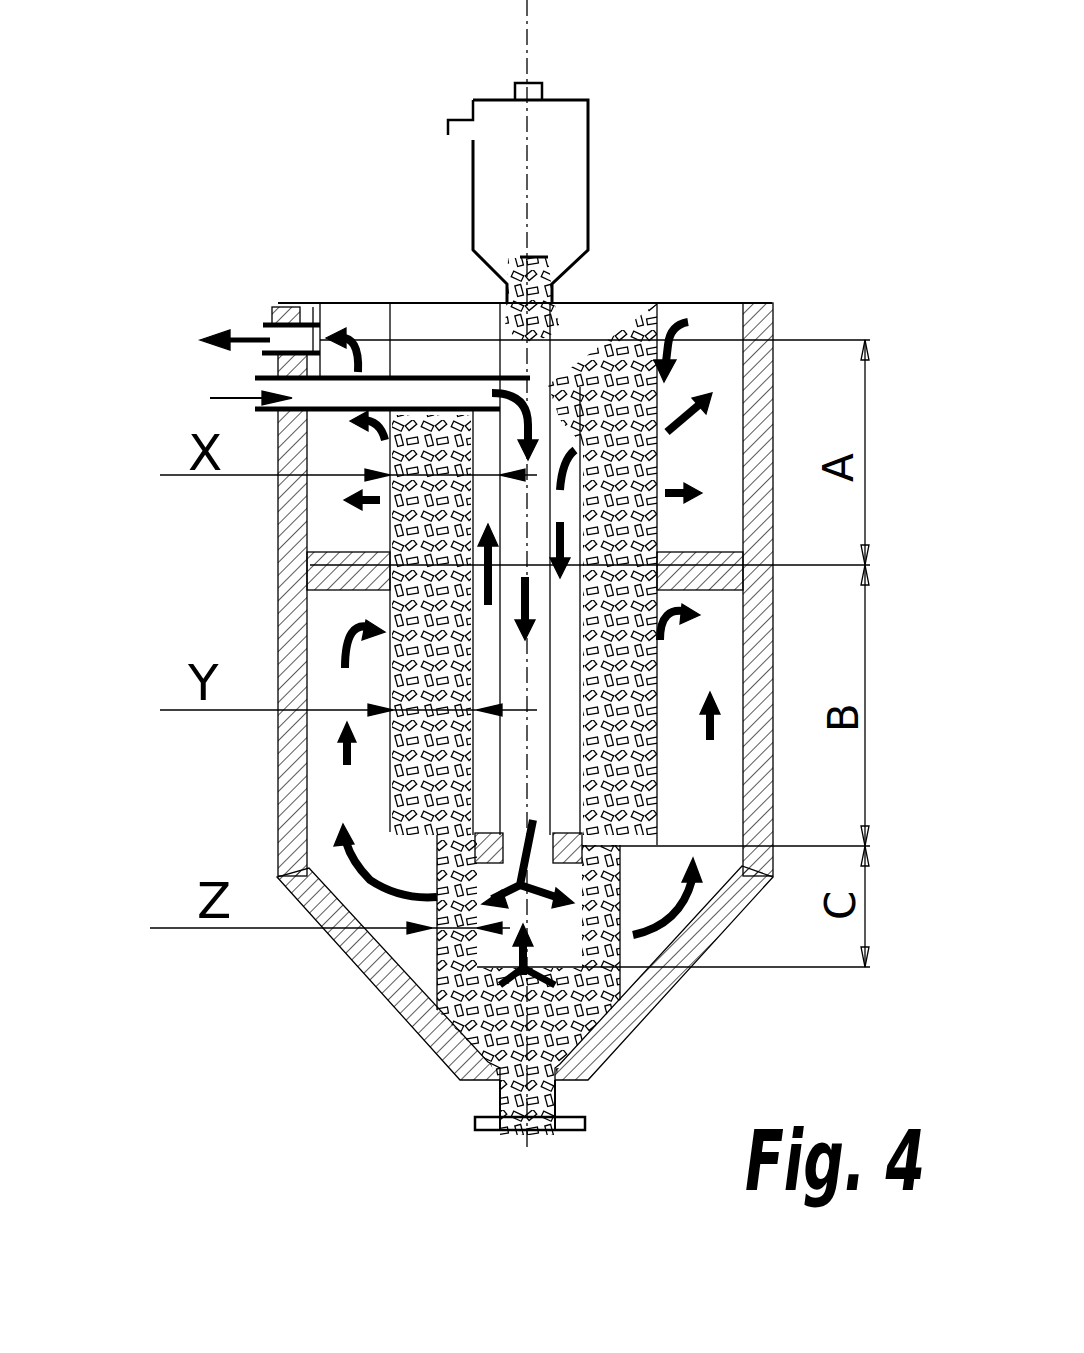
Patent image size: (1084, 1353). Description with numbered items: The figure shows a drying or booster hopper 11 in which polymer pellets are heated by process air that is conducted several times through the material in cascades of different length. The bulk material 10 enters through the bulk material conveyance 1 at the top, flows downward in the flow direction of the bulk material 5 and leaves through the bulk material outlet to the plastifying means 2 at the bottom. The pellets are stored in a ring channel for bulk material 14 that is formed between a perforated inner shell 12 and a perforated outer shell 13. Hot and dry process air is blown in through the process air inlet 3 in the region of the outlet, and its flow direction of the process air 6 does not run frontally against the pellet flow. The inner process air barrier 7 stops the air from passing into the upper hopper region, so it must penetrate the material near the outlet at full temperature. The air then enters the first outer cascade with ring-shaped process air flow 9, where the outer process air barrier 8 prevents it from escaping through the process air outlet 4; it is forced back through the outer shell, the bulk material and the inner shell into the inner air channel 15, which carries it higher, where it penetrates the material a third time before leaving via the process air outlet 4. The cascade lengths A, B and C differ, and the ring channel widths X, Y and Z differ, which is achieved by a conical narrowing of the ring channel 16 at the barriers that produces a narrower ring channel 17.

The bulk material conveyance 1 is at (547, 257).
The bulk material outlet to the plastifying means 2 is at (500, 1107).
The process air inlet 3 is at (313, 393).
The process air outlet 4 is at (270, 340).
The flow direction of the bulk material 5 is at (600, 452).
The flow direction of the process air 6 is at (590, 780).
The inner process air barrier 7 is at (433, 857).
The outer process air barrier 8 is at (305, 560).
The cascade with ring-shaped process air flow 9 is at (337, 808).
The bulk material 10 is at (500, 412).
The drying or booster hopper 11 is at (620, 857).
The perforated inner shell 12 is at (572, 792).
The perforated outer shell 13 is at (657, 670).
The ring channel for bulk material 14 is at (420, 830).
The inner air channel 15 is at (570, 765).
The conical narrowing of the ring channel 16 is at (630, 870).
The narrower ring channel 17 is at (620, 925).